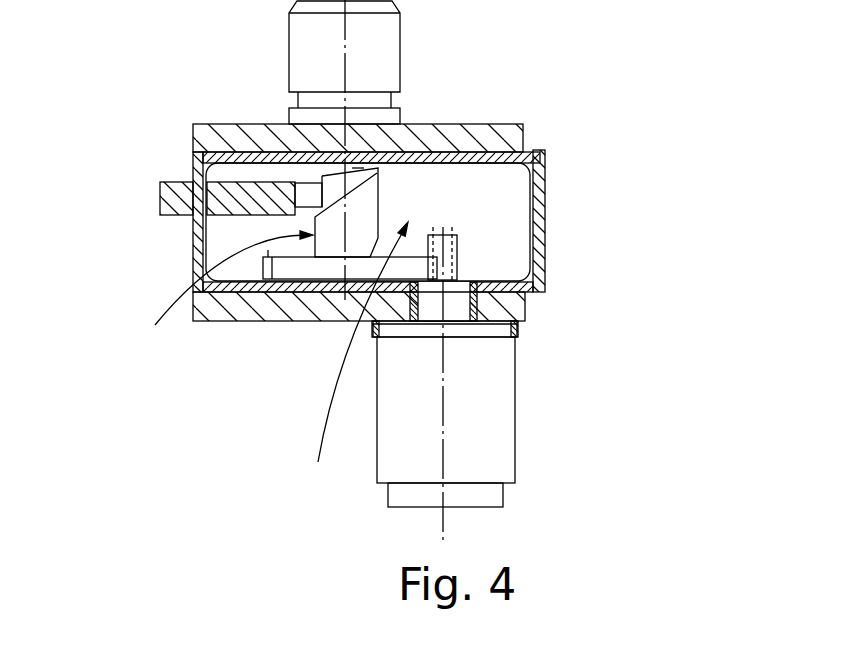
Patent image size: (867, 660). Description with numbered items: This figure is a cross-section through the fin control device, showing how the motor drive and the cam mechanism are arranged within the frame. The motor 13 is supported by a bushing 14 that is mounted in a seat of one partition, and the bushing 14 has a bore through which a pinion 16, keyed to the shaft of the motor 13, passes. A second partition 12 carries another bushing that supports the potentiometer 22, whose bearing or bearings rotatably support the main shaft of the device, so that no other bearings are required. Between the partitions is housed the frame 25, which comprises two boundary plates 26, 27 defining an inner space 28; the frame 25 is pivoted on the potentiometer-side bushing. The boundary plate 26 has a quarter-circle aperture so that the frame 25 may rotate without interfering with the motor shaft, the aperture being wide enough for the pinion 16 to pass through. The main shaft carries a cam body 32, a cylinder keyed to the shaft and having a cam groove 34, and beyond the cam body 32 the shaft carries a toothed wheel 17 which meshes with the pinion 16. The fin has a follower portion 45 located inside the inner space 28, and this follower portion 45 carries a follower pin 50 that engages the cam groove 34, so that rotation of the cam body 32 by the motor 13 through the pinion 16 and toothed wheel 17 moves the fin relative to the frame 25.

The partition 12 is at (350, 214).
The motor 13 is at (495, 428).
The bushing 14 is at (518, 332).
The pinion 16 is at (445, 250).
The toothed wheel 17 is at (312, 262).
The potentiometer 22 is at (390, 72).
The frame 25 is at (547, 252).
The boundary plate 26 is at (236, 298).
The boundary plate 27 is at (193, 125).
The inner space 28 is at (357, 364).
The cam body 32 is at (225, 297).
The cam groove 34 is at (363, 168).
The follower portion 45 is at (230, 218).
The follower pin 50 is at (310, 195).